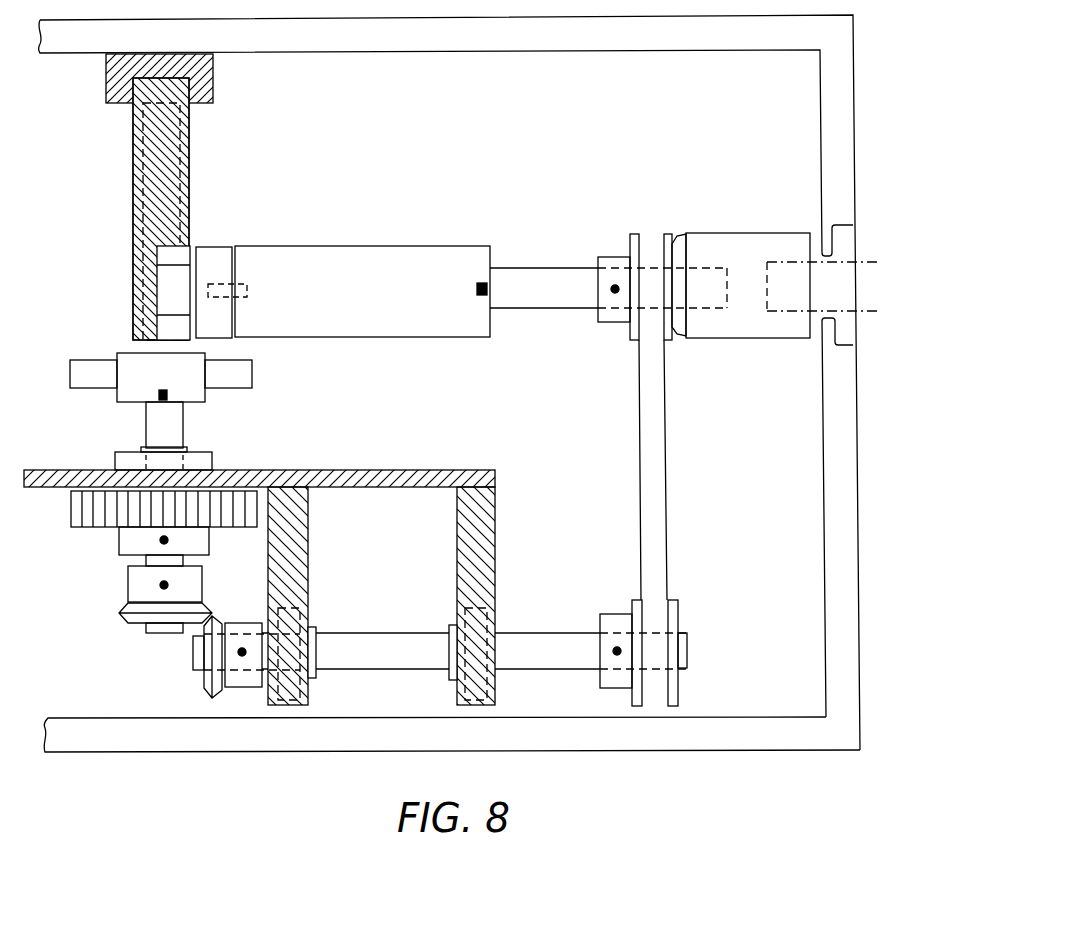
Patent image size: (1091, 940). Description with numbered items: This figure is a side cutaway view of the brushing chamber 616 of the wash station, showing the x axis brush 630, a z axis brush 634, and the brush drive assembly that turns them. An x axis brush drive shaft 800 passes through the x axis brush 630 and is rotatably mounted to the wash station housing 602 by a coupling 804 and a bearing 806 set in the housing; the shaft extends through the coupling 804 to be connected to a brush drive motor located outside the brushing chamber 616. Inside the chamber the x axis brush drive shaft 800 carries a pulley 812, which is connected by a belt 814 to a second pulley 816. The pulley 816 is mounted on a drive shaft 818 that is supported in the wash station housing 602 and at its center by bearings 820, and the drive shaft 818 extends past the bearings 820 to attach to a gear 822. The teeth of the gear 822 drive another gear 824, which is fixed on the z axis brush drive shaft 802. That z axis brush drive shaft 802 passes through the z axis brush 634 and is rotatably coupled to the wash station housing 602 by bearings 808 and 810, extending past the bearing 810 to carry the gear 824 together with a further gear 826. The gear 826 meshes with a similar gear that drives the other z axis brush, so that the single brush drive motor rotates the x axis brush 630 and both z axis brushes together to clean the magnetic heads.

The wash station housing 602 is at (459, 411).
The brushing chamber 616 is at (583, 767).
The x axis brush 630 is at (343, 268).
The z axis brush 634 is at (144, 392).
The x axis brush drive shaft 800 is at (544, 266).
The z axis brush drive shaft 802 is at (202, 427).
The coupling 804 is at (741, 260).
The bearing 806 is at (209, 268).
The bearing 808 is at (181, 197).
The bearing 810 is at (197, 453).
The pulley 812 is at (652, 252).
The belt 814 is at (626, 417).
The pulley 816 is at (690, 644).
The drive shaft 818 is at (474, 634).
The bearings 820 is at (381, 596).
The gear 822 is at (221, 659).
The gear 824 is at (144, 614).
The gear 826 is at (144, 531).